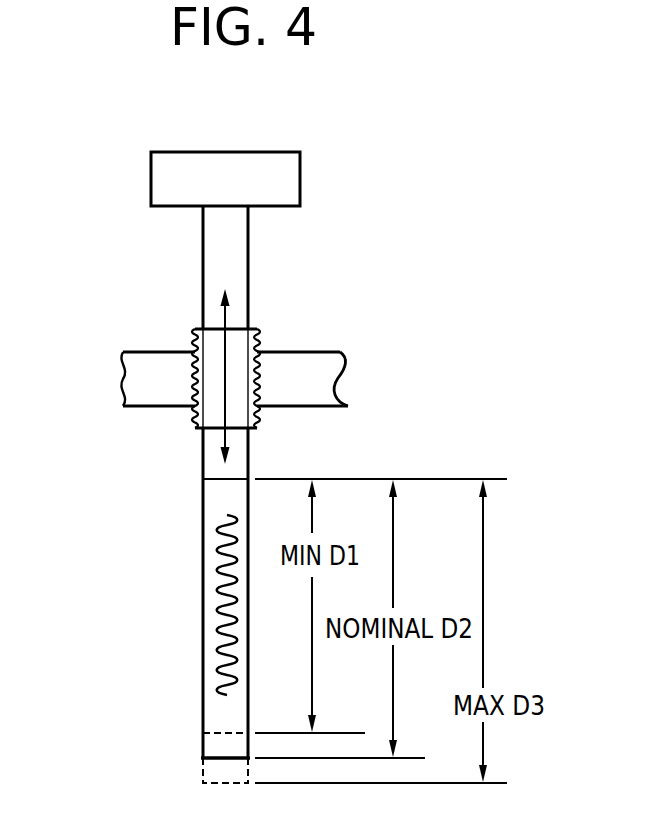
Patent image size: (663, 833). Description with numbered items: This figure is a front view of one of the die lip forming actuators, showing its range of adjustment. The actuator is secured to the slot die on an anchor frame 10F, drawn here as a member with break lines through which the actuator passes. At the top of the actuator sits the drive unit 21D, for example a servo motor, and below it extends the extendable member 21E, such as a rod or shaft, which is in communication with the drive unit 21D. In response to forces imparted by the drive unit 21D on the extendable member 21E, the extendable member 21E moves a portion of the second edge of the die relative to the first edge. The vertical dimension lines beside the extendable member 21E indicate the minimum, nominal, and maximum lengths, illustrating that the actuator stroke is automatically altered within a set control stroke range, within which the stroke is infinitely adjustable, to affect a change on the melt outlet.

The drive unit 21D is at (163, 167).
The anchor frame 10F is at (313, 380).
The extendable member 21E is at (203, 620).